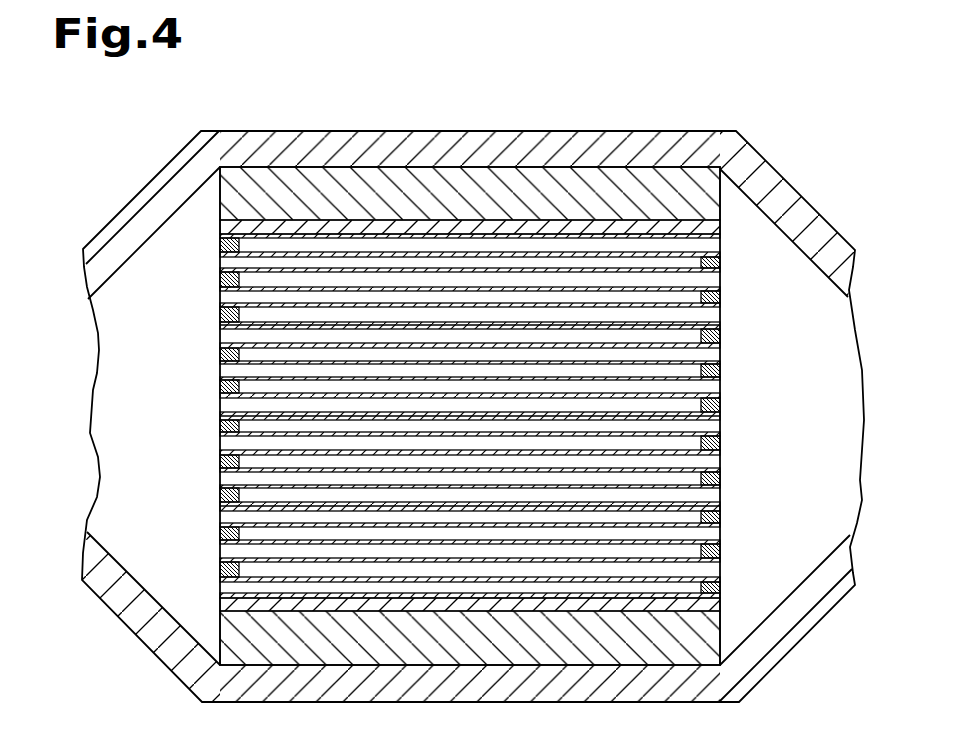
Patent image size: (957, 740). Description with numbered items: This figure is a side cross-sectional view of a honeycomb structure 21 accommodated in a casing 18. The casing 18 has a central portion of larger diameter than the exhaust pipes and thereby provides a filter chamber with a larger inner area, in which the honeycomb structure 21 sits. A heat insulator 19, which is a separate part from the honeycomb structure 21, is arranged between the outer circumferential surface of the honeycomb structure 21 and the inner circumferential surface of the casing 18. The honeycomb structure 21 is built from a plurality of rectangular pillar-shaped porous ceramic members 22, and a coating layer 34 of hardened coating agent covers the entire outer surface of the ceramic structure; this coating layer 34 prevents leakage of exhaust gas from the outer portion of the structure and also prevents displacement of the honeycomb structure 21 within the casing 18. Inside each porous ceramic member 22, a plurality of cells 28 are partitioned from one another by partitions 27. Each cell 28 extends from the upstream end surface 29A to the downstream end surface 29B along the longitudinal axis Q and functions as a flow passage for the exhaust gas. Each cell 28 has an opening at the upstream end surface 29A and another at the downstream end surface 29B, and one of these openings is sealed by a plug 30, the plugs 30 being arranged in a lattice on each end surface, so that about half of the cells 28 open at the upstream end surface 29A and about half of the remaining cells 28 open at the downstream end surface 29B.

The casing 18 is at (530, 131).
The heat insulator 19 is at (362, 193).
The honeycomb structure 21 is at (206, 236).
The coating layer 34 is at (720, 233).
The upstream end surface 29A is at (209, 340).
The downstream end surface 29B is at (738, 360).
The cell 28 is at (196, 412).
The partition 27 is at (225, 477).
The plug 30 is at (723, 479).
The porous ceramic member 22 is at (727, 518).
The axis Q is at (732, 422).